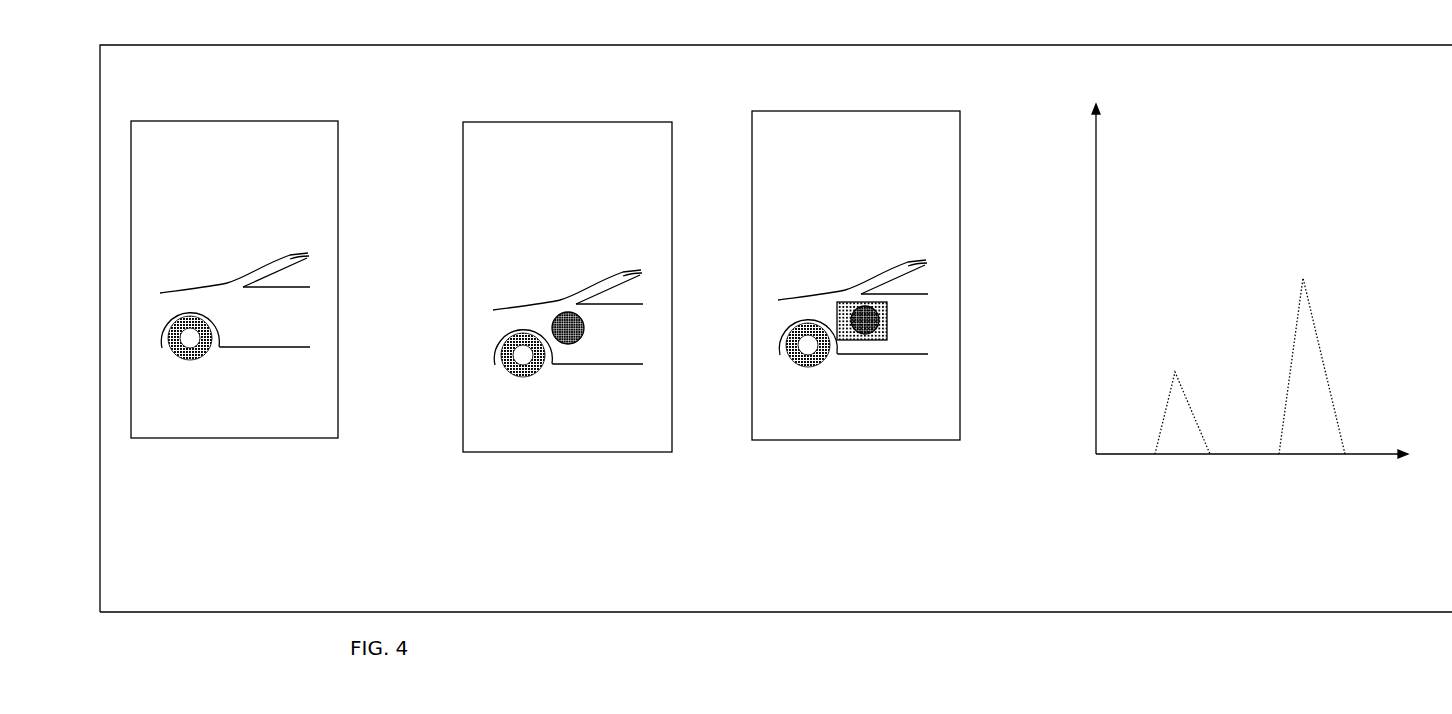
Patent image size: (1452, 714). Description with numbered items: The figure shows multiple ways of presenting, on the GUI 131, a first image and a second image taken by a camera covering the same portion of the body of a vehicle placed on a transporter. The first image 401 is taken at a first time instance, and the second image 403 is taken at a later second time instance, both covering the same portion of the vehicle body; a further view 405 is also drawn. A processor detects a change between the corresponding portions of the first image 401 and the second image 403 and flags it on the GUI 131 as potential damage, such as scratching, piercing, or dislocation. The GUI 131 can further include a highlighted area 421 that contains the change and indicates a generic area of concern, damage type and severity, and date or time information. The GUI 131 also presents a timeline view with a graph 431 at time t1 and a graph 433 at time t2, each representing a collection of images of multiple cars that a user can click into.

The GUI 131 is at (1255, 278).
The first image 401 is at (234, 279).
The second image 403 is at (567, 287).
The third image frame 405 is at (856, 275).
The highlighted area 421 is at (845, 300).
The graph 431 is at (1175, 380).
The graph 433 is at (1315, 325).